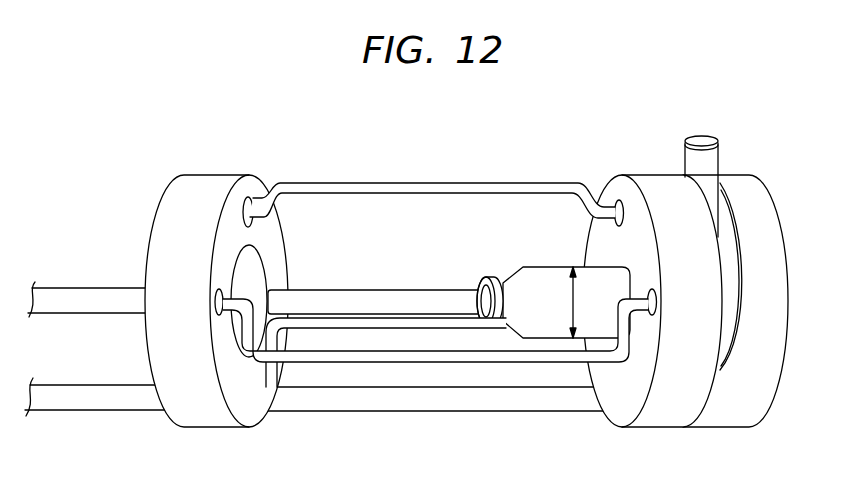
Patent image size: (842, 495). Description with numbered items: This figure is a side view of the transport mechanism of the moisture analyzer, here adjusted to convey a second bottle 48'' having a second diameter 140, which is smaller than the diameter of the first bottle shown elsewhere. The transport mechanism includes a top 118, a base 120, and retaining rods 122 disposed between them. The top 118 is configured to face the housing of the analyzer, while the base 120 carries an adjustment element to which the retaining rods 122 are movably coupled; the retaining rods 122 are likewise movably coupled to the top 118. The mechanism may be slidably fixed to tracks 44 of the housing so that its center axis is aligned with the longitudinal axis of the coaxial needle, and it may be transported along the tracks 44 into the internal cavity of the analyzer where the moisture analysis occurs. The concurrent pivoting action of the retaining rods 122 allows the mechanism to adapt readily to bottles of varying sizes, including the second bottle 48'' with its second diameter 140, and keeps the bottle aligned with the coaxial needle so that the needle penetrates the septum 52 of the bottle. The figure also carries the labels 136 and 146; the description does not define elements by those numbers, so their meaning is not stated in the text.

The sensor assembly 146 is at (465, 479).
The track 44 is at (100, 296).
The top 118 is at (190, 210).
The base 120 is at (662, 190).
The post 136 is at (698, 160).
The second bottle 48'' is at (449, 234).
The second diameter 140 is at (571, 302).
The septum 52 is at (477, 290).
The retaining rods 122 is at (328, 182).